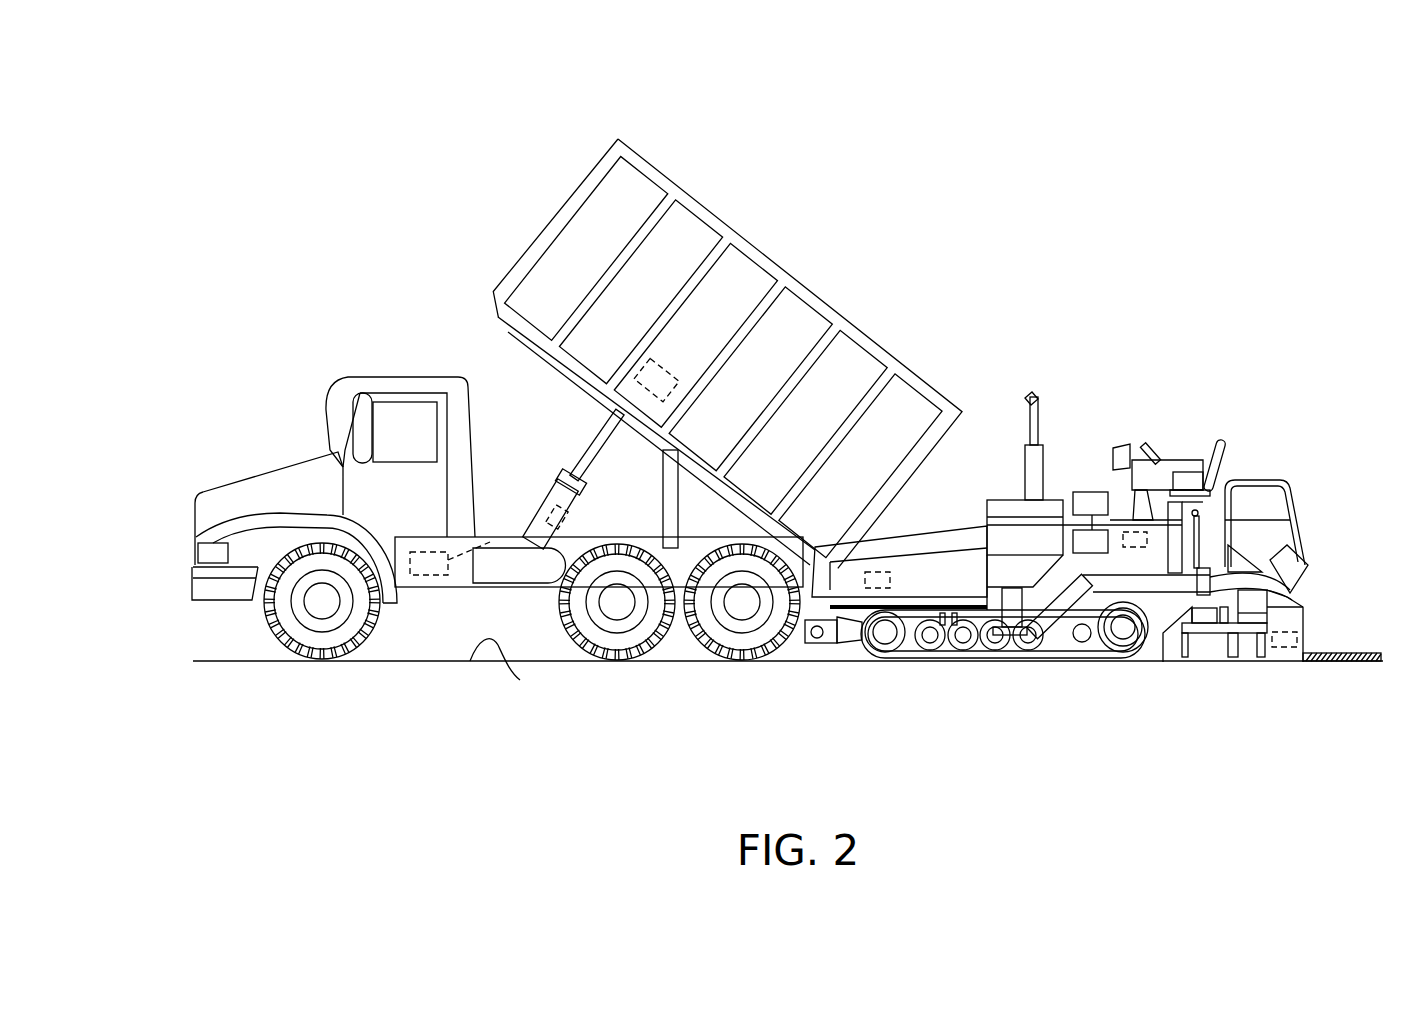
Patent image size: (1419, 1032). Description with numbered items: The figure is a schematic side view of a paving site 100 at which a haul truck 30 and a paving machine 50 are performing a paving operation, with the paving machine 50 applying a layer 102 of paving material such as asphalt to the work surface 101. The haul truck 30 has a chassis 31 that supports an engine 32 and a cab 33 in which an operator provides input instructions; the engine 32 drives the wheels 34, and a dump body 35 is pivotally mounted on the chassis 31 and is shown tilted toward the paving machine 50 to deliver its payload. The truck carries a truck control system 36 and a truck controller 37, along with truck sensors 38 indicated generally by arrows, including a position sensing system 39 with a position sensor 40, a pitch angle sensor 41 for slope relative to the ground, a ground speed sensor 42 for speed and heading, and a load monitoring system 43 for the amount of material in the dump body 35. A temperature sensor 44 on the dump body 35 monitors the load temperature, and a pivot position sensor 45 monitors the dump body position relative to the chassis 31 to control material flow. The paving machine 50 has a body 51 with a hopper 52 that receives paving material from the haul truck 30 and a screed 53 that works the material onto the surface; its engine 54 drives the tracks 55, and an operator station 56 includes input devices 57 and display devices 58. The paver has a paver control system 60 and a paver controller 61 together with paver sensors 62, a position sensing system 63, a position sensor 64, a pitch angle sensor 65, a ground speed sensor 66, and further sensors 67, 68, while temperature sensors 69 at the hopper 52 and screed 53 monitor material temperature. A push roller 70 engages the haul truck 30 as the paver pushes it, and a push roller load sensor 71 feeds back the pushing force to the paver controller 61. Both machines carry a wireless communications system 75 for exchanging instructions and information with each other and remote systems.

The haul truck 30 is at (303, 227).
The chassis 31 is at (435, 578).
The engine 32 is at (292, 497).
The cab 33 is at (392, 382).
The wheels 34 is at (708, 640).
The dump body 35 is at (722, 348).
The truck control system 36 is at (166, 352).
The truck controller 37 is at (450, 558).
The truck sensors 38 is at (204, 345).
The position sensing system 39 is at (238, 340).
The position sensor 40 is at (281, 340).
The pitch angle sensor 41 is at (335, 340).
The ground speed sensor 42 is at (400, 340).
The load monitoring system 43 is at (458, 343).
The temperature sensor 44 is at (648, 386).
The pivot position sensor 45 is at (556, 506).
The paving machine 50 is at (1253, 330).
The body 51 is at (1053, 580).
The hopper 52 is at (925, 570).
The screed 53 is at (1287, 620).
The engine 54 is at (1005, 505).
The tracks 55 is at (997, 657).
The operator station 56 is at (1202, 440).
The input devices 57 is at (1145, 443).
The display devices 58 is at (1140, 443).
The paver control system 60 is at (1258, 405).
The paver controller 61 is at (1127, 533).
The paver sensors 62 is at (1310, 415).
The position sensing system 63 is at (1176, 318).
The position sensor 64 is at (1143, 318).
The pitch angle sensor 65 is at (1100, 318).
The ground speed sensor 66 is at (1057, 318).
The sensor 67 is at (1013, 320).
The sensor 68 is at (972, 322).
The temperature sensors 69 is at (875, 590).
The push roller 70 is at (777, 665).
The push roller load sensor 71 is at (818, 663).
The wireless communications system 75 is at (1303, 483).
The paving site 100 is at (940, 152).
The work surface 101 is at (507, 660).
The layer 102 is at (1343, 653).